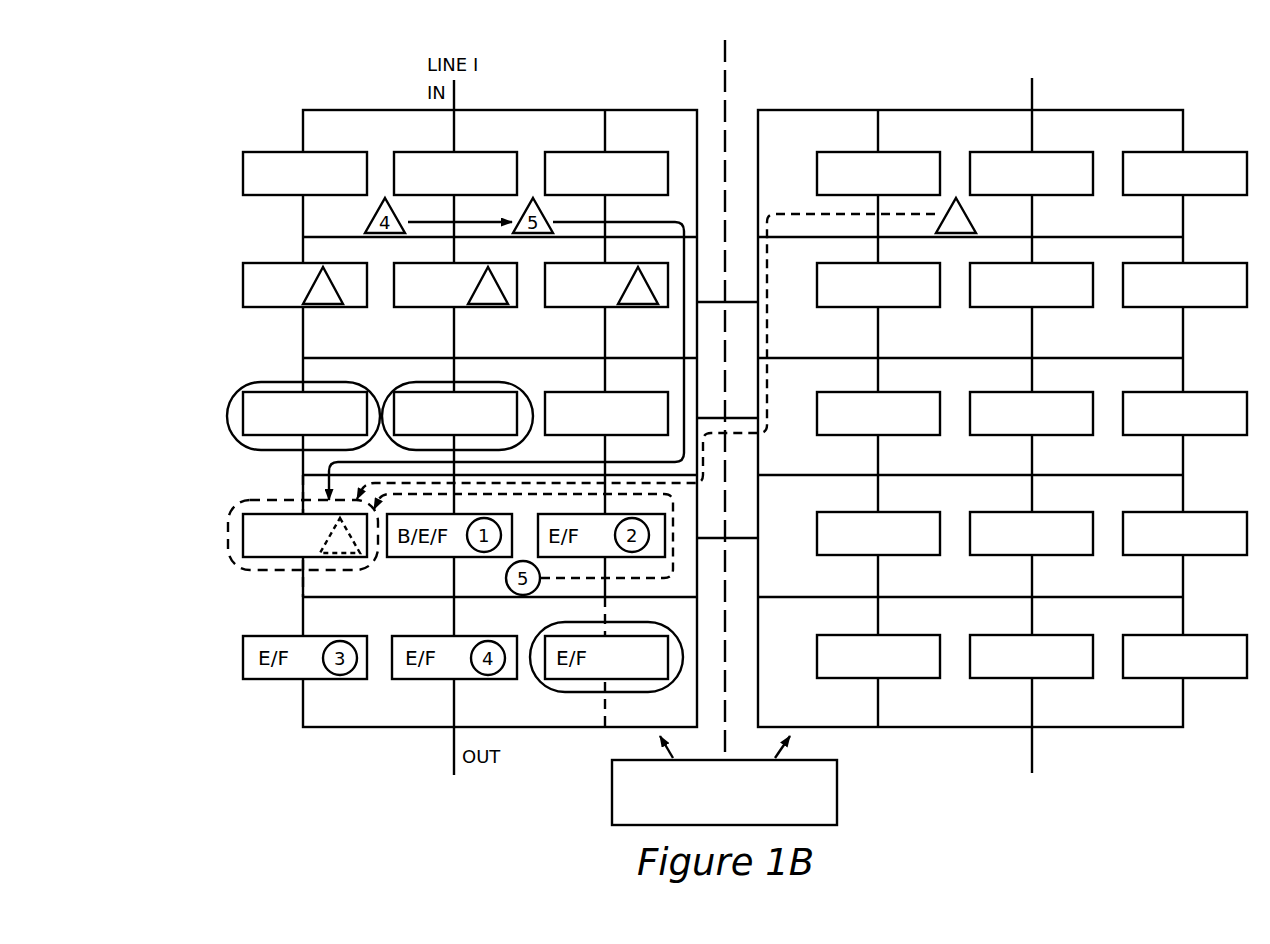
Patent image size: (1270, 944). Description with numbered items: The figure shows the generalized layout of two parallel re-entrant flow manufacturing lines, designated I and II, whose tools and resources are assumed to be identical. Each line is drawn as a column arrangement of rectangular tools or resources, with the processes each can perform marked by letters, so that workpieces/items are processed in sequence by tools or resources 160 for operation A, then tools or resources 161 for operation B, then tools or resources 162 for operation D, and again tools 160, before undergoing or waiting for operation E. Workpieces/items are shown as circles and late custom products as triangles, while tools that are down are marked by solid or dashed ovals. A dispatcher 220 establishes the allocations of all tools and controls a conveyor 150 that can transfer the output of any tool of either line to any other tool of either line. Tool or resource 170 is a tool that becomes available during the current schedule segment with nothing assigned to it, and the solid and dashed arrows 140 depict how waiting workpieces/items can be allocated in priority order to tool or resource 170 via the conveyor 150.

The tools or resources 160 is at (240, 172).
The tools or resources 161 is at (240, 285).
The tools or resources 162 is at (222, 418).
The task migration path 140 is at (684, 462).
The tool or resource 170 is at (230, 547).
The conveyor 150 is at (930, 733).
The dispatcher 220 is at (837, 787).